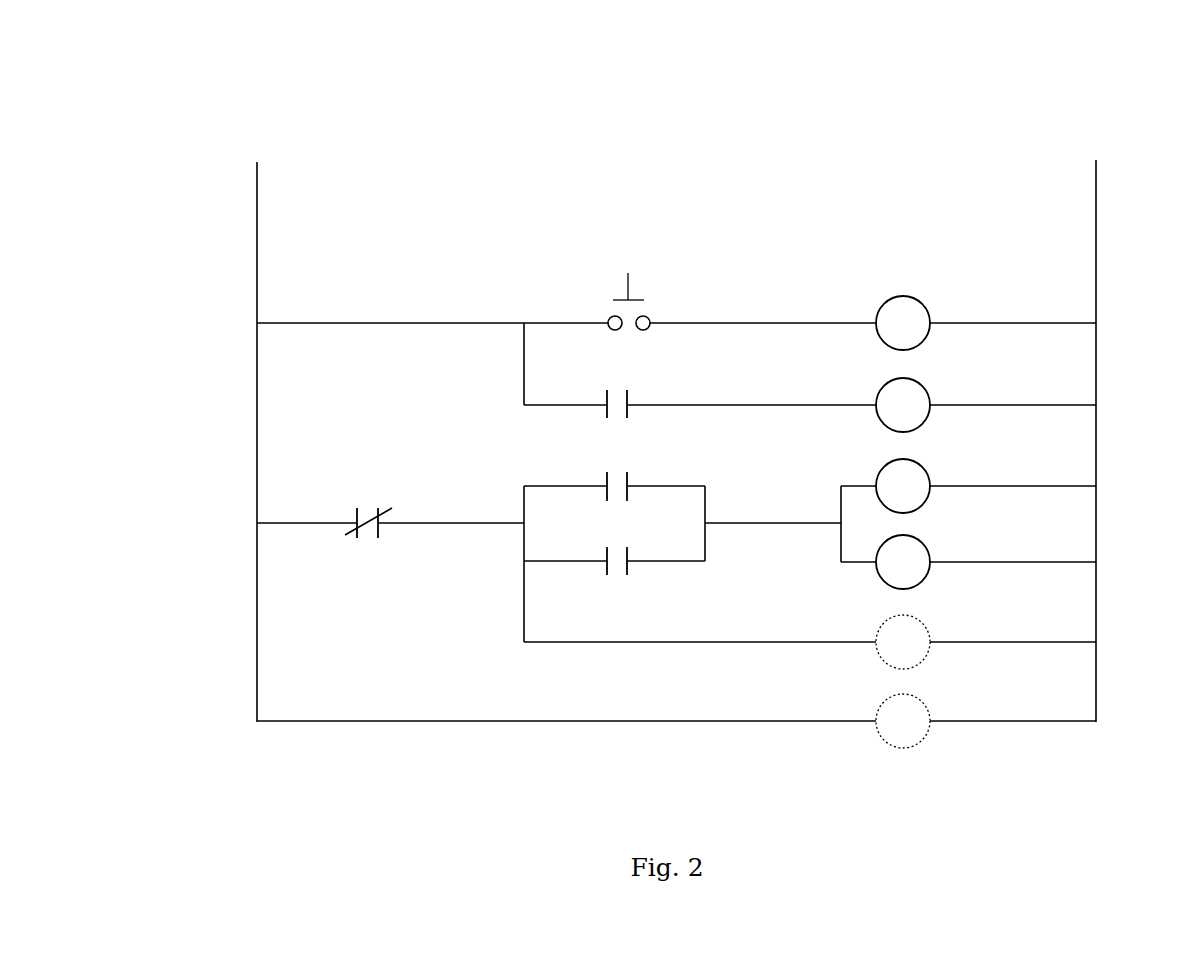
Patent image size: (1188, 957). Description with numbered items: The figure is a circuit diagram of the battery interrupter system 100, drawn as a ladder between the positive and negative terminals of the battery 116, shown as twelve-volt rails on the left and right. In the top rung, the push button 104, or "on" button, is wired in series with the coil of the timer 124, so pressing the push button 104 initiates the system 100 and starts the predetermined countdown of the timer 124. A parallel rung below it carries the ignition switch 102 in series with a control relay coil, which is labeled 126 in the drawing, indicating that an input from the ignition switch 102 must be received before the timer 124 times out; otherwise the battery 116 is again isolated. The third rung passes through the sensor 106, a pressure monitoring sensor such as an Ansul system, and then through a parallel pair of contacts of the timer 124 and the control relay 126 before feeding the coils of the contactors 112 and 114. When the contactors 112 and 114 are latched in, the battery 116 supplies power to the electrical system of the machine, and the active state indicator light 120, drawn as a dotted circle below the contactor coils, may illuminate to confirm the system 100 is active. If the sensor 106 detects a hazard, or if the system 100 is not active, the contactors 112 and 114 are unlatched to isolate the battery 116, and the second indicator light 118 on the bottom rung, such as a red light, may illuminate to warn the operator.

The battery interrupter system 100 is at (210, 106).
The battery 116 is at (273, 134).
The push button 104 is at (628, 244).
The timer 124 is at (910, 297).
The control relay CR1 126 is at (925, 384).
The ignition switch 102 is at (645, 377).
The sensor 106 is at (362, 505).
The contactor 112 is at (925, 467).
The contactor 114 is at (925, 543).
The indicator light 120 is at (928, 628).
The second indicator light 118 is at (927, 706).